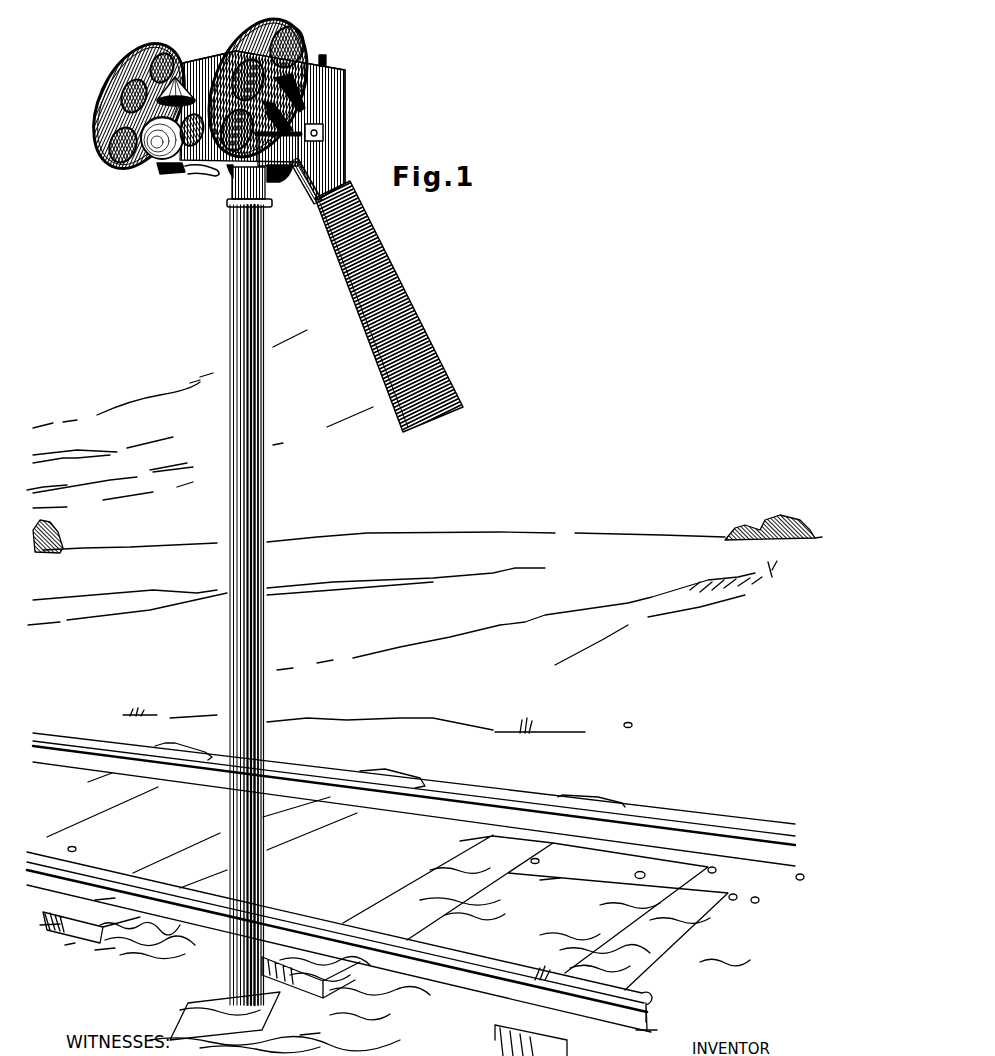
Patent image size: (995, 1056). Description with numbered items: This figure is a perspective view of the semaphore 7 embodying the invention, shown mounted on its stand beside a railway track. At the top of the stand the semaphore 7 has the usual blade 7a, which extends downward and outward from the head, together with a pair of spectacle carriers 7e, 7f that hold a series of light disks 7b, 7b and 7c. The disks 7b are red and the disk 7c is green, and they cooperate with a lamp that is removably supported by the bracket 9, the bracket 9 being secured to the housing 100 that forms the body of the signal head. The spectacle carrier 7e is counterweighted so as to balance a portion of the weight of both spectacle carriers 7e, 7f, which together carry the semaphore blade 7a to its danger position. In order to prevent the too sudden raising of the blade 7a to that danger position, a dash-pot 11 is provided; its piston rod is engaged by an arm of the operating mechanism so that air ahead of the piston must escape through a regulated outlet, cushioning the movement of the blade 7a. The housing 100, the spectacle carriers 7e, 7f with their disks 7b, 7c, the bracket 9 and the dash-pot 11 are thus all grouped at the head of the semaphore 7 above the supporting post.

The semaphore 7 is at (323, 134).
The blade 7a is at (375, 252).
The light disk 7b is at (318, 46).
The light disk 7c is at (220, 174).
The spectacle carrier 7e is at (107, 112).
The spectacle carrier 7f is at (273, 23).
The bracket 9 is at (197, 172).
The dash-pot 11 is at (327, 61).
The housing 100 is at (262, 125).